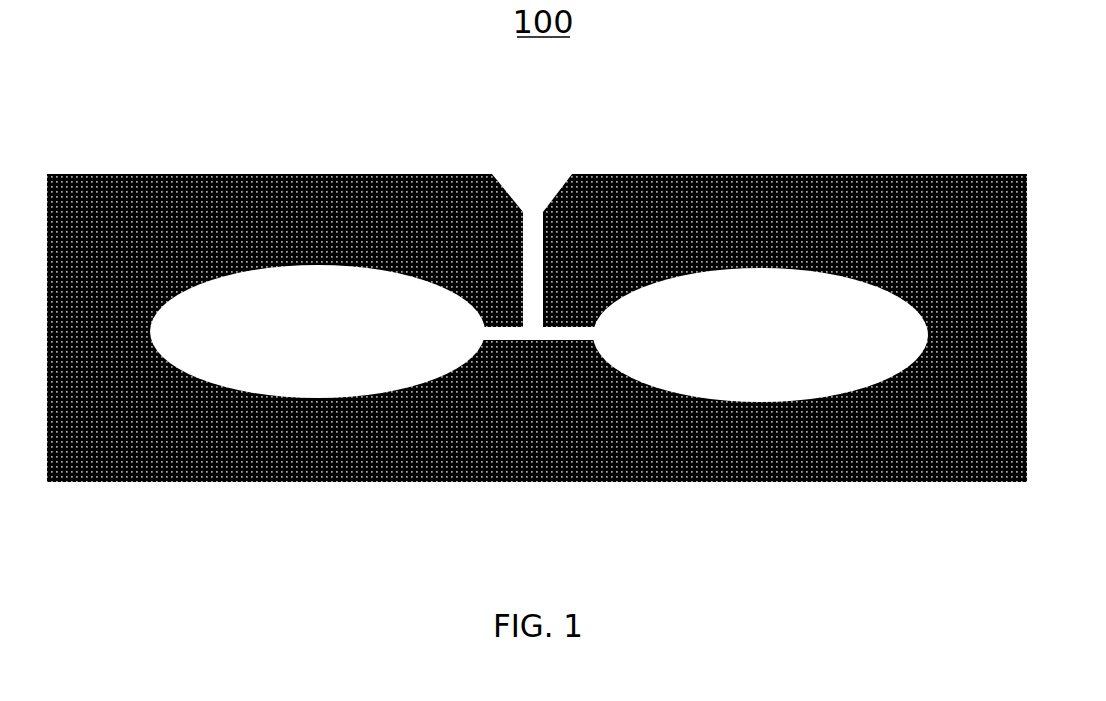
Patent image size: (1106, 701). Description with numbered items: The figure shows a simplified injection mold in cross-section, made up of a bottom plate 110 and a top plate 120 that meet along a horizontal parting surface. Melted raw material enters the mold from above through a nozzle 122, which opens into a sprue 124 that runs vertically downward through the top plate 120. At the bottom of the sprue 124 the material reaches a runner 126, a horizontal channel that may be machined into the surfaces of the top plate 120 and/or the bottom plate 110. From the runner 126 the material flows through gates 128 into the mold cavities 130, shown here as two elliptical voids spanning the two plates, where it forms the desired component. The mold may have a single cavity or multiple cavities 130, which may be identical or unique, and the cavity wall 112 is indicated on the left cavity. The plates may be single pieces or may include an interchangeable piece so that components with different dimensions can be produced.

The bottom plate 110 is at (1027, 412).
The mold cavity surface 112 is at (312, 398).
The top plate 120 is at (1027, 200).
The nozzle 122 is at (560, 174).
The sprue 124 is at (537, 250).
The runner 126 is at (546, 335).
The gates 128 is at (482, 332).
The mold cavities 130 is at (539, 333).